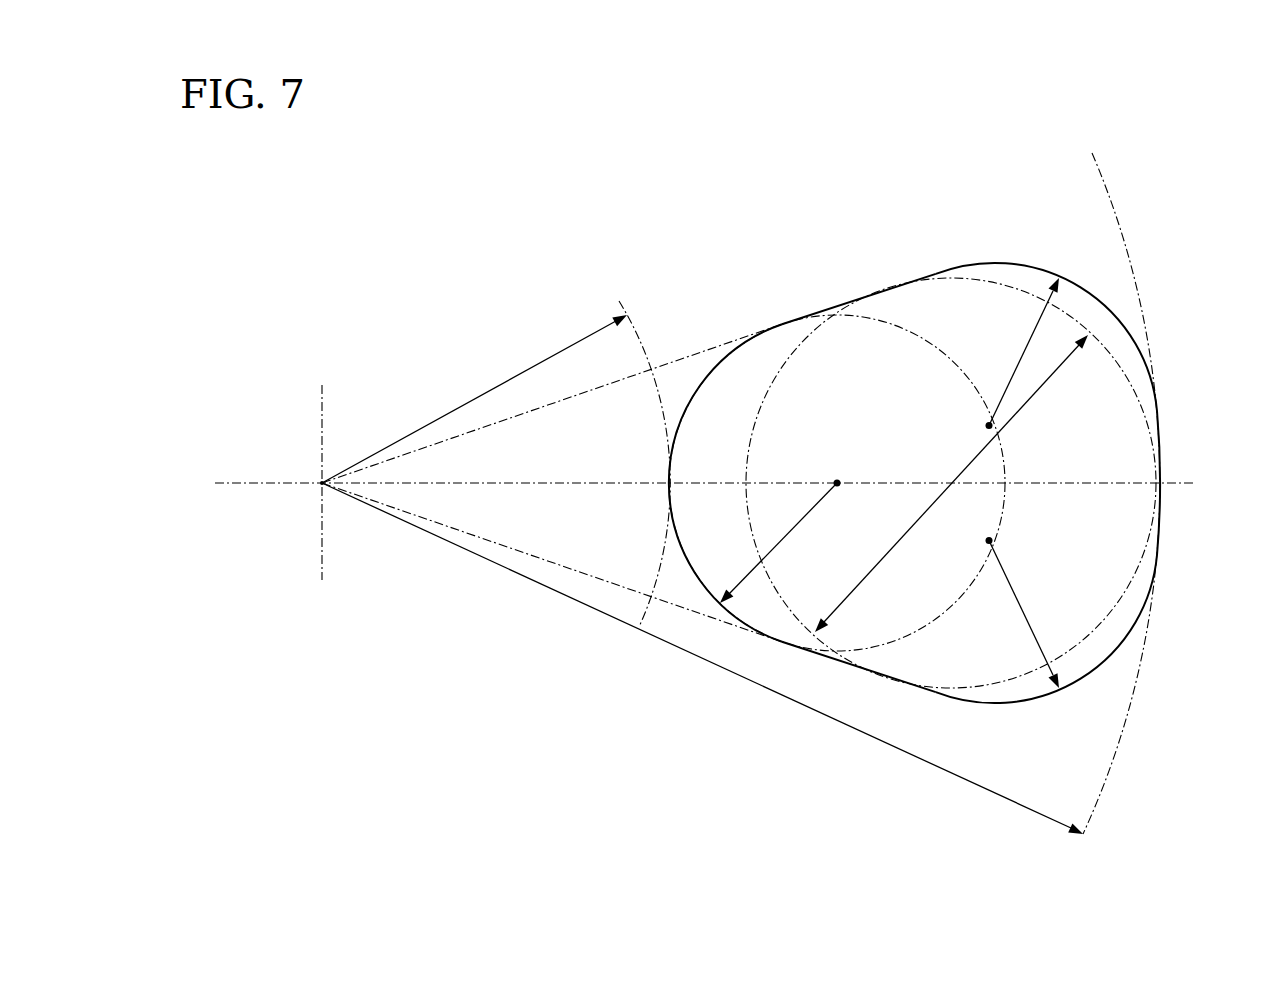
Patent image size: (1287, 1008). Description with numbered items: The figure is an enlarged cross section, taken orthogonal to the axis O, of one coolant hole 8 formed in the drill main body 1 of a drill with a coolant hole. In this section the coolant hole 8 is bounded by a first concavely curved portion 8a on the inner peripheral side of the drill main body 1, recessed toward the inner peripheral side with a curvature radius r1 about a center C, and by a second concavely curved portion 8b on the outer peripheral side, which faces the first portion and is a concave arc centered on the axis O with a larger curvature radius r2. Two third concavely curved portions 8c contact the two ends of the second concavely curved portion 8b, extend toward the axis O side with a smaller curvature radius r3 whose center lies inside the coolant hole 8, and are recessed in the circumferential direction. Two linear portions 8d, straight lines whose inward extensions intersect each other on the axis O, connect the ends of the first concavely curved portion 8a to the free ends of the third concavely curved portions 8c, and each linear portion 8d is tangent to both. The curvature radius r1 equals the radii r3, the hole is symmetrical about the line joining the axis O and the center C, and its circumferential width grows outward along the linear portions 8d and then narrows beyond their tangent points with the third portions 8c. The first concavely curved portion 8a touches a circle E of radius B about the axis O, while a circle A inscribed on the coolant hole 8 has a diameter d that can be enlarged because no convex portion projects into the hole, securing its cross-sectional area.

The drill main body 1 is at (692, 811).
The coolant hole 8 is at (945, 421).
The first concavely curved portion 8a is at (688, 400).
The second concavely curved portion 8b is at (1158, 502).
The third concavely curved portion 8c is at (1128, 332).
The linear portion 8d is at (883, 288).
The axis O is at (318, 490).
The center of the first concavely curved portion C is at (837, 481).
The circle E is at (645, 352).
The circle inscribed on the coolant hole A is at (1081, 313).
The radius of circle E B is at (474, 399).
The diameter of circle A d is at (951, 483).
The curvature radius of the first concavely curved portion r1 is at (778, 543).
The curvature radius of the second concavely curved portion r2 is at (741, 493).
The curvature radius of the third concavely curved portion r3 is at (1024, 483).